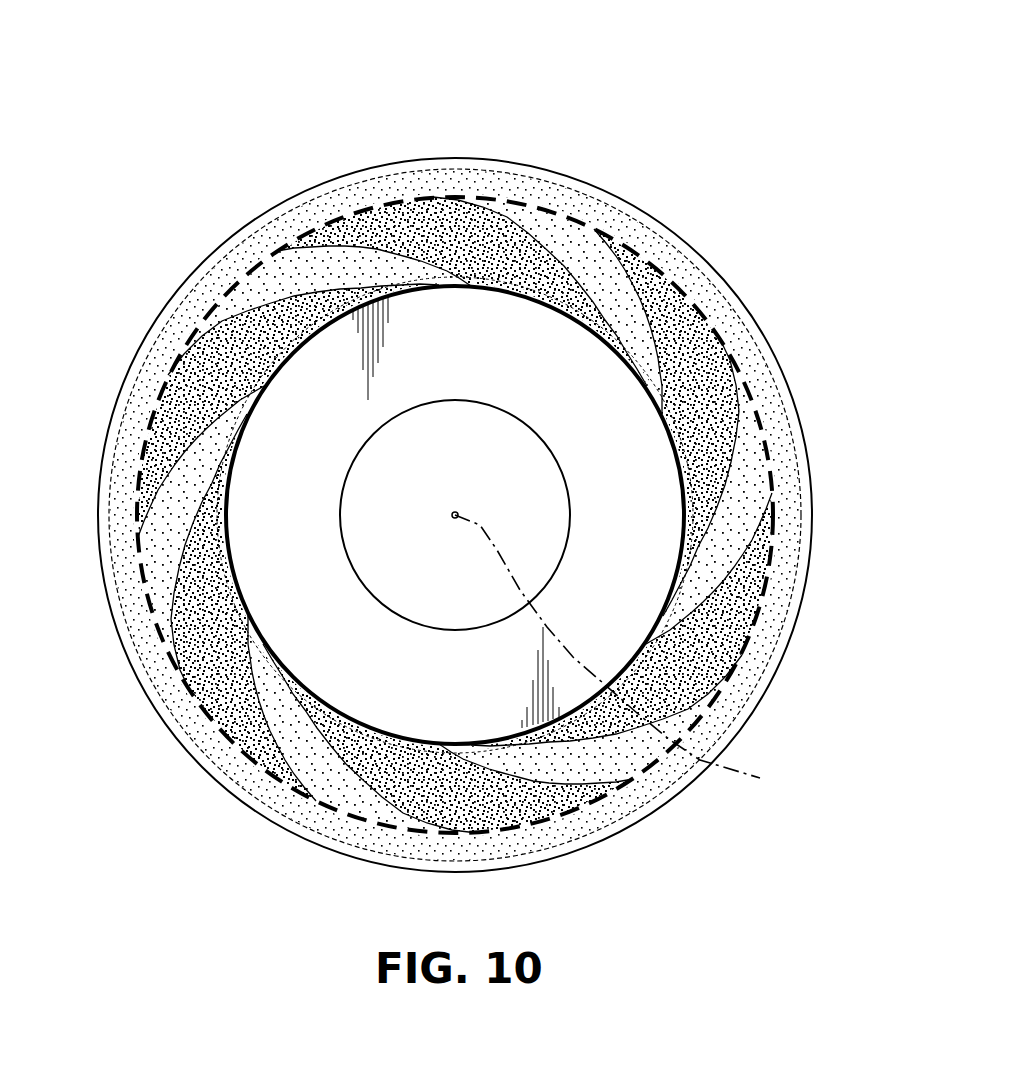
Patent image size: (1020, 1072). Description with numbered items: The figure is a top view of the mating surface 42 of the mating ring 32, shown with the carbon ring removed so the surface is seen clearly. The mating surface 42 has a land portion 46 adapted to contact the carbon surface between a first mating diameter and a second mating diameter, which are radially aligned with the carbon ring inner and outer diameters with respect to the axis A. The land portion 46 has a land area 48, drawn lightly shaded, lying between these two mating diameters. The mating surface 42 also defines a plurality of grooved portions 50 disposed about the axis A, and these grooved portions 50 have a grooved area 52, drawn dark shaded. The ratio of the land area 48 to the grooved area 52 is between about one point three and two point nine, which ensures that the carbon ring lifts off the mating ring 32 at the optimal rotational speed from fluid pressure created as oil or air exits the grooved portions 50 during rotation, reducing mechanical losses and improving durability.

The mating ring 32 is at (168, 64).
The mating surface 42 is at (122, 547).
The land portion 46 is at (157, 560).
The land area 48 is at (462, 187).
The grooved portions 50 is at (447, 228).
The grooved area 52 is at (417, 225).
The axis A is at (617, 655).